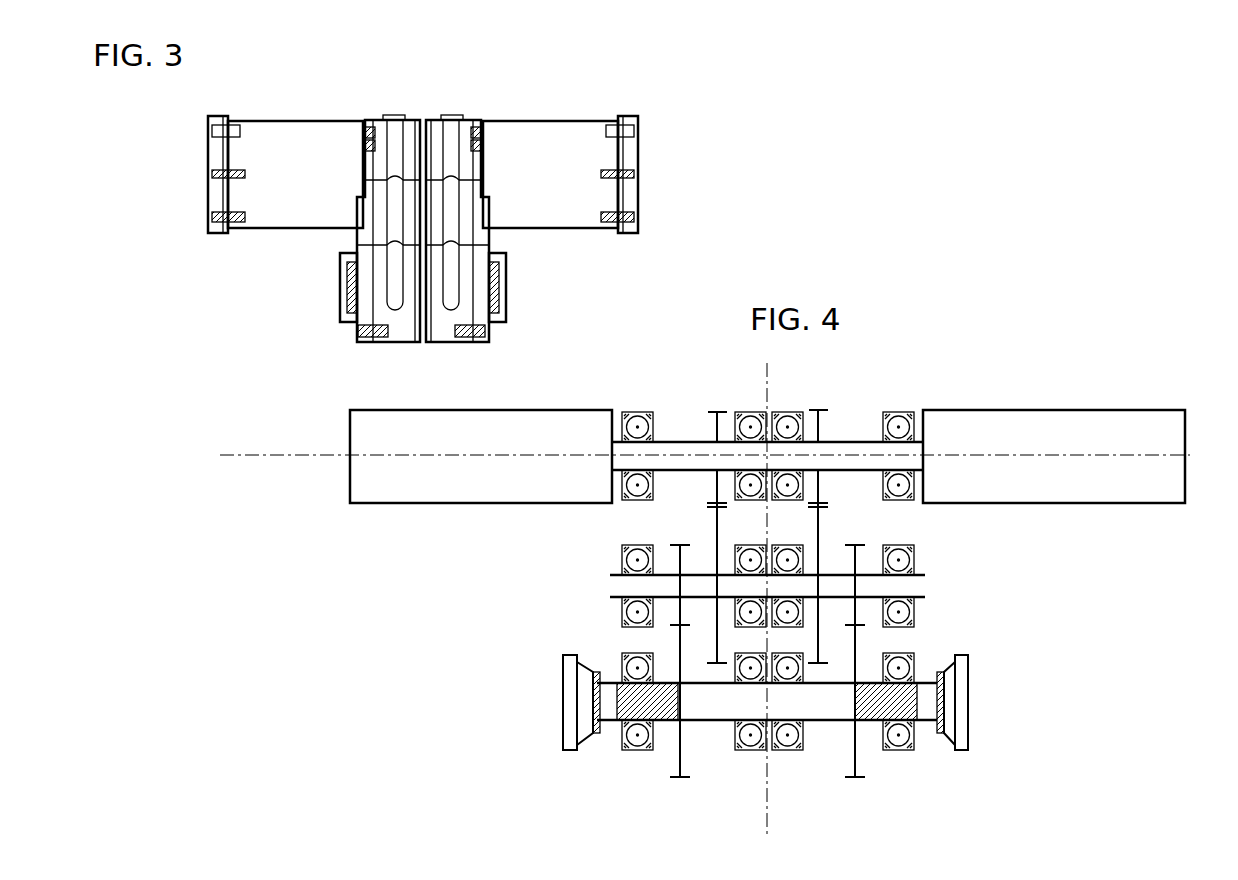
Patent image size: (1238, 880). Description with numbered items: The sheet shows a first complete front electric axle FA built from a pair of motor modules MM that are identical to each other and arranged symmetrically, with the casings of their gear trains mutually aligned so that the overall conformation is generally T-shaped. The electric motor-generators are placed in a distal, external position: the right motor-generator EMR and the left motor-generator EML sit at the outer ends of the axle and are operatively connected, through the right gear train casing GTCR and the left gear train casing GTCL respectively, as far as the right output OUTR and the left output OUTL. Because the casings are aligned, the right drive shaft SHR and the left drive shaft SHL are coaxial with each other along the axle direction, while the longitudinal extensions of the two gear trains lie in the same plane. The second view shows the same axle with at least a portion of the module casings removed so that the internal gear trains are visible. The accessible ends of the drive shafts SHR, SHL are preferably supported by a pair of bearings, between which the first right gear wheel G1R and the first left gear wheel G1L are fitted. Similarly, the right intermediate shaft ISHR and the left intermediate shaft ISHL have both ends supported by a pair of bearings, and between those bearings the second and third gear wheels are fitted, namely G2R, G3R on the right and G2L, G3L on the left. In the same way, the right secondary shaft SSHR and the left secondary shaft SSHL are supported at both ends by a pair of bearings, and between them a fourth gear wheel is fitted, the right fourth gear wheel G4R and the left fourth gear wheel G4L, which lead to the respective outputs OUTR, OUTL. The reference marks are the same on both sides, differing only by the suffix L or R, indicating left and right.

In FIG. 3, the electric axle FA is at (542, 100).
In FIG. 3, the motor module MM is at (477, 108).
In FIG. 3, the left motor-generator EML is at (346, 173).
In FIG. 4, the left motor-generator EML is at (492, 448).
In FIG. 3, the right motor-generator EMR is at (532, 174).
In FIG. 4, the right motor-generator EMR is at (1060, 448).
In FIG. 3, the left gear train casing GTCL is at (203, 195).
In FIG. 3, the right gear train casing GTCR is at (648, 206).
In FIG. 3, the left output OUTL is at (332, 295).
In FIG. 4, the left output OUTL is at (558, 703).
In FIG. 3, the right output OUTR is at (514, 307).
In FIG. 4, the right output OUTR is at (977, 703).
In FIG. 4, the left drive shaft SHL is at (684, 440).
In FIG. 4, the right drive shaft SHR is at (845, 440).
In FIG. 4, the first left gear wheel G1L is at (719, 410).
In FIG. 4, the first right gear wheel G1R is at (815, 408).
In FIG. 4, the second left gear wheel G2L is at (713, 506).
In FIG. 4, the second right gear wheel G2R is at (822, 505).
In FIG. 4, the third left gear wheel G3L is at (677, 545).
In FIG. 4, the third right gear wheel G3R is at (858, 545).
In FIG. 4, the fourth left gear wheel G4L is at (678, 775).
In FIG. 4, the fourth right gear wheel G4R is at (858, 770).
In FIG. 4, the left intermediate shaft ISHL is at (632, 582).
In FIG. 4, the right intermediate shaft ISHR is at (905, 583).
In FIG. 4, the left secondary shaft SSHL is at (710, 710).
In FIG. 4, the right secondary shaft SSHR is at (828, 710).